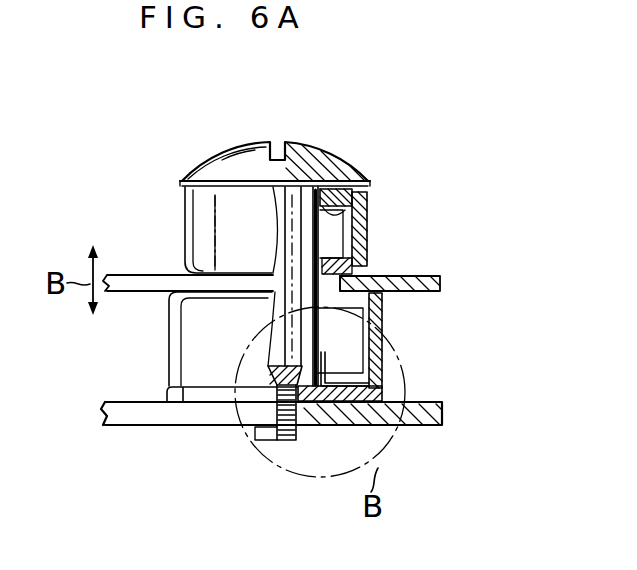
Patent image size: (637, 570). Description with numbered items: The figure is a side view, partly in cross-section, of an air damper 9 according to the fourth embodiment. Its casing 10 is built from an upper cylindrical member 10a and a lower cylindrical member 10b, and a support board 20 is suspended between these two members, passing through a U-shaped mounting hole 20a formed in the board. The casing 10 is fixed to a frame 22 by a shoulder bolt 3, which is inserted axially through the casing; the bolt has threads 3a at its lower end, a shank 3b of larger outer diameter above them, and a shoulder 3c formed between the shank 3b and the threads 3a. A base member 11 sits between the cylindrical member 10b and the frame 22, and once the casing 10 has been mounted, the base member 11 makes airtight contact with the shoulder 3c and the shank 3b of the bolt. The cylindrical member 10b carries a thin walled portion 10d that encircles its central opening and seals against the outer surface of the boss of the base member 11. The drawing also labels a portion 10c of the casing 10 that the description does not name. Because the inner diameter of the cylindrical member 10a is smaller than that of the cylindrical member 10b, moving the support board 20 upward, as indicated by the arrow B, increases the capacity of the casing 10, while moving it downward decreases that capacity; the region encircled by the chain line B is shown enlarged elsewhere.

The shoulder bolt 3 is at (229, 151).
The threads 3a is at (290, 445).
The shank 3b is at (301, 233).
The shoulder 3c is at (268, 366).
The air damper 9 is at (336, 144).
The casing 10 is at (183, 239).
The cylindrical member 10a is at (368, 226).
The cylindrical member 10b is at (383, 322).
The upper hook portion of grommet 10c is at (368, 201).
The thin walled portion 10d is at (368, 423).
The base member 11 is at (182, 393).
The support board 20 is at (438, 293).
The mounting hole 20a is at (382, 295).
The frame 22 is at (433, 414).